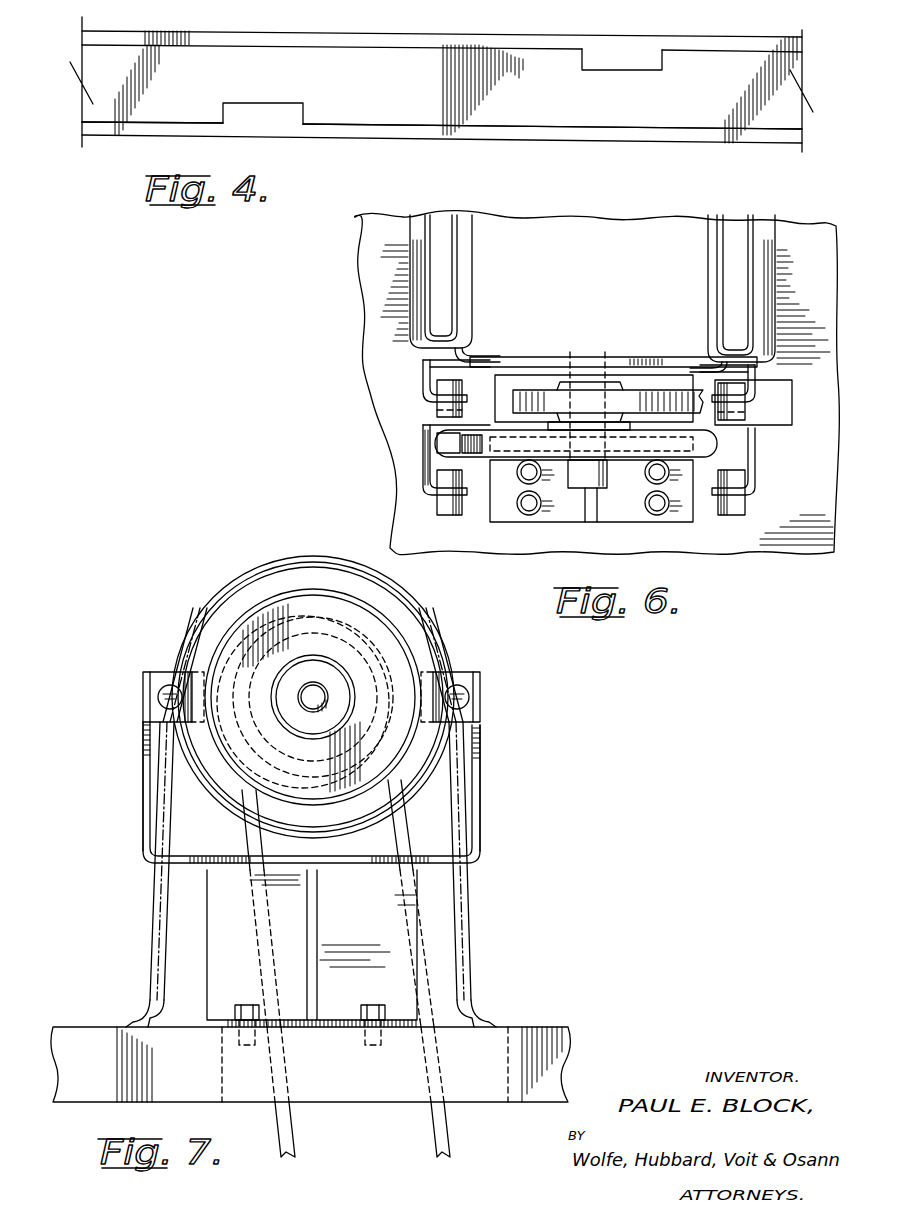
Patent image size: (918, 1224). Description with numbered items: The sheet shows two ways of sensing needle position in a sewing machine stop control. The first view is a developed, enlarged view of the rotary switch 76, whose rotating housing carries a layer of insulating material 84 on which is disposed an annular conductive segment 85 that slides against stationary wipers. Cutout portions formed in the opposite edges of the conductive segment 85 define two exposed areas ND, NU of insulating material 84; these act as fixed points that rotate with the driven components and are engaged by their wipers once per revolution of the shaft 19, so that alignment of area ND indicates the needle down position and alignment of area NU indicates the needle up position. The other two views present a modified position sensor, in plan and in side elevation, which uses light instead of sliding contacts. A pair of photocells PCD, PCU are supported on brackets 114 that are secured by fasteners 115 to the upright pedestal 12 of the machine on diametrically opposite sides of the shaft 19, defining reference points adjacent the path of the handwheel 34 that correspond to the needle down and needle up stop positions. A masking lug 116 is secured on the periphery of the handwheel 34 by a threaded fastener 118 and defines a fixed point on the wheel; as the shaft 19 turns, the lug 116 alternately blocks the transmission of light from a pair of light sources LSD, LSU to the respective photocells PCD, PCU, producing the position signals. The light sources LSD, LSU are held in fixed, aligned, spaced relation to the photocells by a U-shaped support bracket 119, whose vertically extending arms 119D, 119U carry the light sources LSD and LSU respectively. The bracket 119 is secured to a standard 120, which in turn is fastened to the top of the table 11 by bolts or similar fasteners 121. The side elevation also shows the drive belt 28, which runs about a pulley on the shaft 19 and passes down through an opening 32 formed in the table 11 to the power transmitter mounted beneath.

In FIG. 6, the table 11 is at (372, 356).
In FIG. 7, the table 11 is at (90, 1032).
In FIG. 6, the upright pedestal 12 is at (438, 297).
In FIG. 7, the upright pedestal 12 is at (466, 902).
In FIG. 6, the shaft 19 is at (575, 495).
In FIG. 7, the shaft 19 is at (313, 712).
In FIG. 7, the drive belt 28 is at (452, 1135).
In FIG. 7, the opening 32 is at (508, 1060).
In FIG. 6, the handwheel 34 is at (648, 462).
In FIG. 7, the handwheel 34 is at (422, 630).
In FIG. 6, the rotary switch 76 is at (392, 403).
In FIG. 4, the insulating material 84 is at (495, 133).
In FIG. 4, the conductive segment 85 is at (572, 125).
In FIG. 6, the brackets 114 is at (425, 390).
In FIG. 6, the fasteners 115 is at (490, 372).
In FIG. 6, the masking lug 116 is at (437, 440).
In FIG. 6, the threaded fastener 118 is at (423, 490).
In FIG. 7, the U-shaped support bracket 119 is at (222, 858).
In FIG. 7, the vertically extending arm 119D is at (148, 787).
In FIG. 7, the vertically extending arm 119U is at (481, 768).
In FIG. 7, the standard 120 is at (214, 985).
In FIG. 6, the fasteners 121 is at (660, 508).
In FIG. 7, the fasteners 121 is at (250, 992).
In FIG. 4, the exposed area ND is at (606, 60).
In FIG. 4, the exposed area NU is at (274, 119).
In FIG. 6, the photocell PCD is at (436, 411).
In FIG. 6, the photocell PCU is at (748, 412).
In FIG. 6, the light source LSD is at (450, 512).
In FIG. 7, the light source LSD is at (163, 686).
In FIG. 6, the light source LSU is at (758, 508).
In FIG. 7, the light source LSU is at (460, 686).